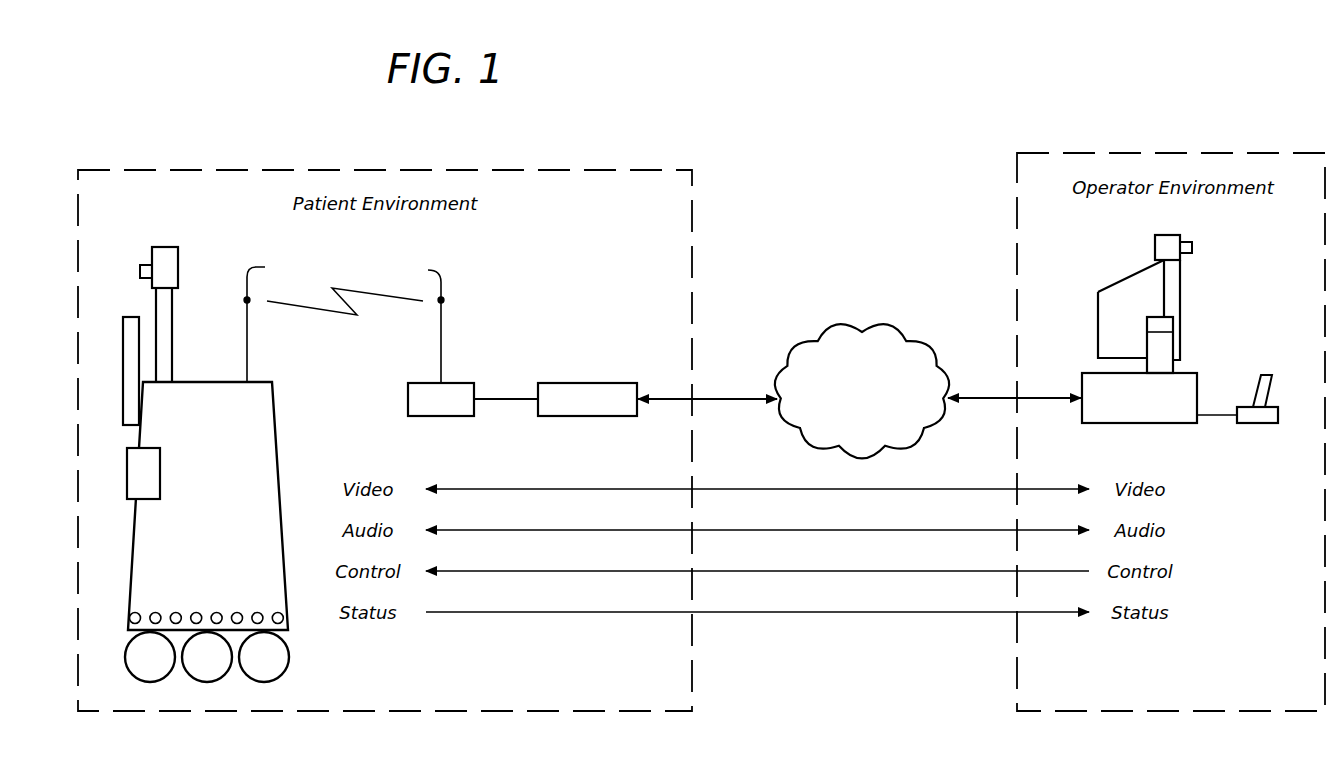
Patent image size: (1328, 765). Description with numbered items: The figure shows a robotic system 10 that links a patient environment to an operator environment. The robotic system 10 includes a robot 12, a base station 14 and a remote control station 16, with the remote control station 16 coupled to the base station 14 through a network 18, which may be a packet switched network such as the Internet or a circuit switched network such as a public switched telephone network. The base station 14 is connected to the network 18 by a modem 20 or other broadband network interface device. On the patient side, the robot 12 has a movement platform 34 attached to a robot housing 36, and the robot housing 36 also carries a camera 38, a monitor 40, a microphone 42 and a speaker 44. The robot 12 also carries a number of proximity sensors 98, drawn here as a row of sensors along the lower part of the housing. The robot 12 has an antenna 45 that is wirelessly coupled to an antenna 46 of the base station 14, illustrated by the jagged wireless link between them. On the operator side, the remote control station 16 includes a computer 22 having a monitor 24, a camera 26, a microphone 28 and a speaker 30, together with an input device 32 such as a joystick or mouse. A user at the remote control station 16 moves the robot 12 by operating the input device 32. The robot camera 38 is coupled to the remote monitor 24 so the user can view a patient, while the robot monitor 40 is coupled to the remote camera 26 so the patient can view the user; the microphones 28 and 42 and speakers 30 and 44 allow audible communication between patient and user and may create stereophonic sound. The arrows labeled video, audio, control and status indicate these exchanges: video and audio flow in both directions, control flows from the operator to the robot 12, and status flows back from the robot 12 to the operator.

The robotic system 10 is at (862, 272).
The robot 12 is at (258, 437).
The base station 14 is at (457, 383).
The remote control station 16 is at (1105, 332).
The network 18 is at (862, 391).
The modem 20 is at (587, 383).
The computer 22 is at (1172, 417).
The monitor 24 is at (1175, 285).
The camera 26 is at (1163, 247).
The microphone 28 is at (1155, 320).
The speaker 30 is at (1167, 367).
The input device 32 is at (1268, 413).
The movement platform 34 is at (268, 663).
The robot housing 36 is at (165, 590).
The camera 38 is at (172, 277).
The monitor 40 is at (130, 359).
The microphone 42 is at (164, 257).
The speaker 44 is at (138, 478).
The antenna 45 is at (269, 318).
The antenna 46 is at (422, 321).
The proximity sensors 98 is at (132, 612).